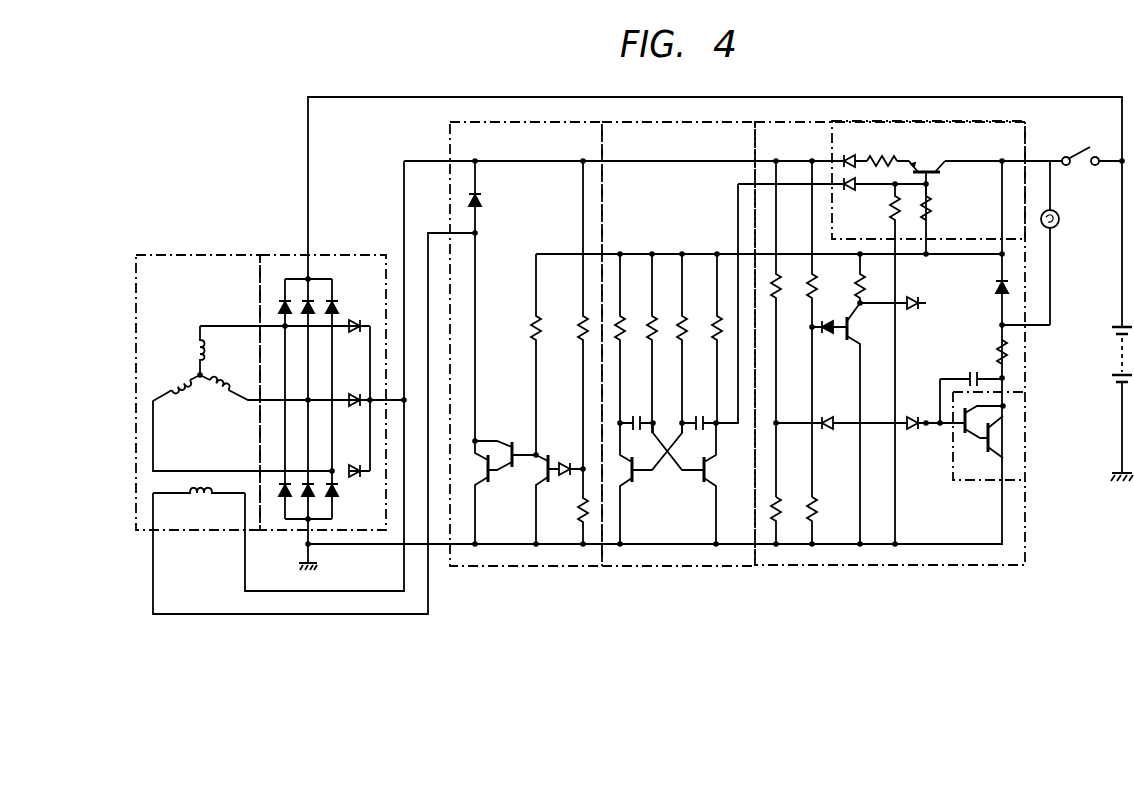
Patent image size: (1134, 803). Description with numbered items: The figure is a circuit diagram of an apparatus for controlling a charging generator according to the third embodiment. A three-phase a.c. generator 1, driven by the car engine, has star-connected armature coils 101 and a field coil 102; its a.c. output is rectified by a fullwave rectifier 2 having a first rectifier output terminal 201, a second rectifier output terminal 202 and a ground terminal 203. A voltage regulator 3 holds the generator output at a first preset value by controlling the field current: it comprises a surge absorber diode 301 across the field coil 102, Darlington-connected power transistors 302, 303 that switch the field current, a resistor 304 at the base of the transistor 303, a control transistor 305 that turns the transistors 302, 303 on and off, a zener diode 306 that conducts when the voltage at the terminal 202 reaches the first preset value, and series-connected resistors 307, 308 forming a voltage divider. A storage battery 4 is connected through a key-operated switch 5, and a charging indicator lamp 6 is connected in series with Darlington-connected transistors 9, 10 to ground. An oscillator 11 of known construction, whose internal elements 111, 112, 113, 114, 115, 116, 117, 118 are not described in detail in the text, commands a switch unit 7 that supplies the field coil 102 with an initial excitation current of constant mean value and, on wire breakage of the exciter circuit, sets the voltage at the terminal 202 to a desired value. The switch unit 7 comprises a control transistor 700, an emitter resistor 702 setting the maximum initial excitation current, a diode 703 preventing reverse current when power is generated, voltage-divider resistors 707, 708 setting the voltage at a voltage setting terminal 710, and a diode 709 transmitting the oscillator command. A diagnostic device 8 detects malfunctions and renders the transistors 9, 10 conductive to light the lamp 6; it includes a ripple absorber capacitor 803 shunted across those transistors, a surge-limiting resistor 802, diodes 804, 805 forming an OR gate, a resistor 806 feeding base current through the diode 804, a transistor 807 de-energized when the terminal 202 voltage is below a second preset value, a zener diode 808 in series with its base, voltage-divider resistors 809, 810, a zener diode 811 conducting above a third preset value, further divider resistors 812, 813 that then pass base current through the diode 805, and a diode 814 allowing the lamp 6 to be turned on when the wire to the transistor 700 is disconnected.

The three-phase a.c. generator 1 is at (183, 263).
The armature coils 101 is at (231, 382).
The field coil 102 is at (192, 495).
The fullwave rectifier 2 is at (294, 258).
The first rectifier output terminal 201 is at (332, 277).
The second rectifier output terminal 202 is at (376, 341).
The ground terminal 203 is at (329, 489).
The voltage regulator 3 is at (493, 562).
The surge absorber diode 301 is at (484, 200).
The power transistor 302 is at (477, 488).
The power transistor 303 is at (512, 441).
The resistor 304 is at (538, 331).
The control transistor 305 is at (540, 482).
The zener diode 306 is at (565, 460).
The resistor 307 is at (581, 325).
The resistor 308 is at (581, 506).
The oscillator 11 is at (680, 566).
The transistor 111 is at (702, 485).
The transistor 112 is at (627, 485).
The capacitor 113 is at (699, 409).
The capacitor 114 is at (636, 409).
The resistor 115 is at (710, 324).
The resistor 116 is at (686, 323).
The resistor 117 is at (649, 324).
The resistor 118 is at (624, 323).
The diagnostic device 8 is at (858, 566).
The resistor 802 is at (998, 346).
The ripple absorber capacitor 803 is at (974, 370).
The diode 804 is at (917, 300).
The diode 805 is at (910, 433).
The resistor 806 is at (864, 290).
The transistor 807 is at (857, 352).
The zener diode 808 is at (826, 334).
The resistor 809 is at (818, 266).
The resistor 810 is at (830, 515).
The zener diode 811 is at (834, 431).
The resistor 812 is at (784, 288).
The resistor 813 is at (783, 502).
The diode 814 is at (993, 284).
The switch unit 7 is at (1000, 121).
The control transistor 700 is at (930, 162).
The resistor 702 is at (879, 158).
The diode 703 is at (851, 156).
The resistor 707 is at (928, 218).
The resistor 708 is at (890, 220).
The diode 709 is at (856, 188).
The voltage setting terminal 710 is at (928, 185).
The transistor 9 is at (998, 440).
The transistor 10 is at (970, 437).
The key-operated switch 5 is at (1076, 145).
The charging indicator lamp 6 is at (1058, 221).
The storage battery 4 is at (1110, 355).